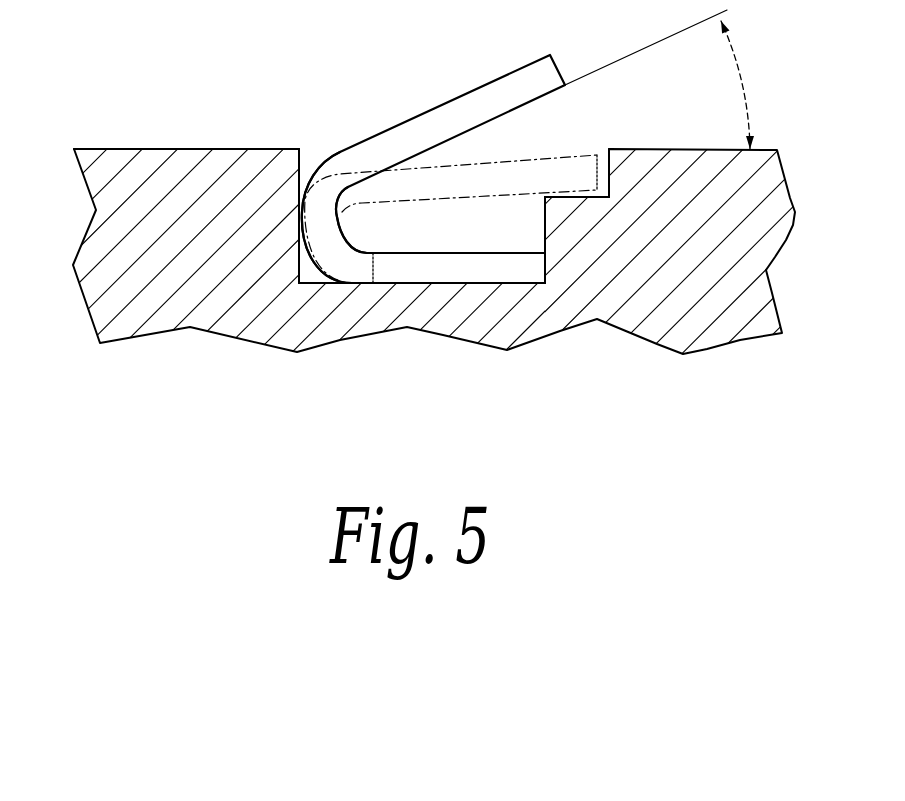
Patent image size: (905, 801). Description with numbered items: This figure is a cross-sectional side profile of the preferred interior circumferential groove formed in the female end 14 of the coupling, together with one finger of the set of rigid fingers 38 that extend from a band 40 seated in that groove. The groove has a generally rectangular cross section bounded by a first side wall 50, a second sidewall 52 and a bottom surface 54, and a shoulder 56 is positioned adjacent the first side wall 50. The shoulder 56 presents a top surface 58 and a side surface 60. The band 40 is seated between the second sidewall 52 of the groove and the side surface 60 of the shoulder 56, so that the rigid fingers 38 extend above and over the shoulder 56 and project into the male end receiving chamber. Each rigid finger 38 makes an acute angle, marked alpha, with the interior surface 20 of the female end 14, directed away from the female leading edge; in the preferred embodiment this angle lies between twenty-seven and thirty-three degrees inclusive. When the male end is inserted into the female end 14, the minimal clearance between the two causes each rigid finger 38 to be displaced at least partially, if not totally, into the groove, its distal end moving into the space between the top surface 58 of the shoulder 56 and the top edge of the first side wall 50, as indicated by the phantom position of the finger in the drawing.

The female end 14 is at (203, 241).
The interior surface 20 is at (197, 148).
The rigid fingers 38 is at (420, 128).
The band 40 is at (452, 253).
The first side wall 50 is at (611, 177).
The second sidewall 52 is at (299, 210).
The bottom surface 54 is at (447, 285).
The shoulder 56 is at (572, 243).
The top surface 58 is at (593, 187).
The side surface 60 is at (545, 225).